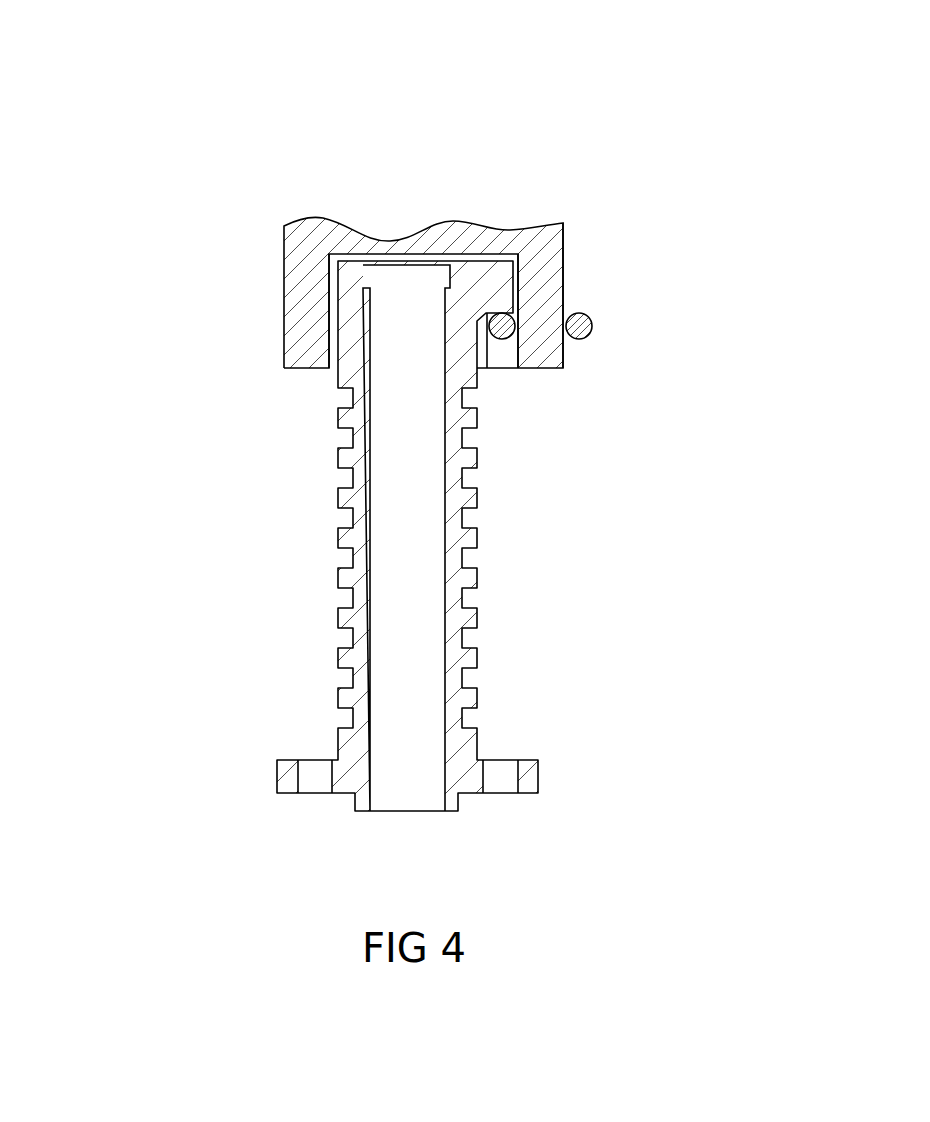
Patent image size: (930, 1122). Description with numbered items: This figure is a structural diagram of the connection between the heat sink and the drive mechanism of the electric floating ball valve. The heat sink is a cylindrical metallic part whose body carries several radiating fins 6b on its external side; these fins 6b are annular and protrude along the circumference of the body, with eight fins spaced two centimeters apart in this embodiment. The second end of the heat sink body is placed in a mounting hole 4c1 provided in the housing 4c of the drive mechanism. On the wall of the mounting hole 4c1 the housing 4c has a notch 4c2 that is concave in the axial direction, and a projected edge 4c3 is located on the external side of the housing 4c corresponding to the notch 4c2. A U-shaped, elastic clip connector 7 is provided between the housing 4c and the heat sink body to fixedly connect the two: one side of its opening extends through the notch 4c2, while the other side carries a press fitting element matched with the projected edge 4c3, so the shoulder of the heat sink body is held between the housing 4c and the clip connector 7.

The housing 4c is at (336, 242).
The mounting hole 4c1 is at (335, 310).
The notch 4c2 is at (503, 355).
The projected edge 4c3 is at (563, 283).
The clip connector 7 is at (592, 328).
The radiating fins 6b is at (463, 579).